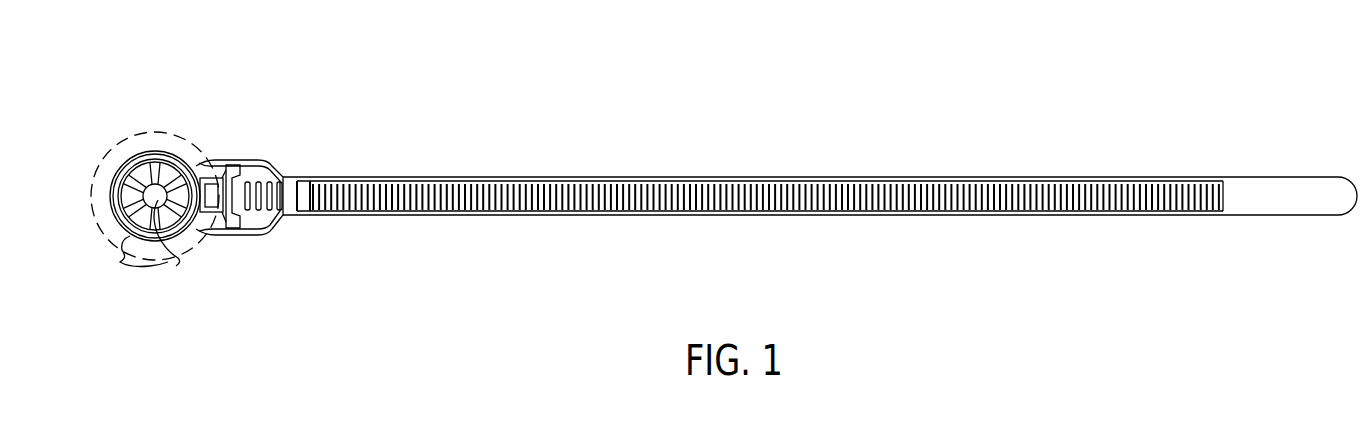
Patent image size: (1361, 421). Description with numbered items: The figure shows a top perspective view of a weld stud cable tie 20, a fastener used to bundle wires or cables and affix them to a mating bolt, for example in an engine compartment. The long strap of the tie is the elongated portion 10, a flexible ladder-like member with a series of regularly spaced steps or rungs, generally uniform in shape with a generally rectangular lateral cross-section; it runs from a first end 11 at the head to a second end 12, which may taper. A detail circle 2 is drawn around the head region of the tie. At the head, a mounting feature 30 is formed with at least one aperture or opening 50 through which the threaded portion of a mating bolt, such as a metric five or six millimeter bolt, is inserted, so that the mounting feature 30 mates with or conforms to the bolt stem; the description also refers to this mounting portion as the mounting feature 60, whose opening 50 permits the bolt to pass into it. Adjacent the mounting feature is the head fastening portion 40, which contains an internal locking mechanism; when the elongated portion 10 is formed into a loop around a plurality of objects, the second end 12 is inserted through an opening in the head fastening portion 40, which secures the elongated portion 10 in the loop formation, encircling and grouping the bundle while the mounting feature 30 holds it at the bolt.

The section line / detail circle 2 is at (156, 130).
The elongated portion 10 is at (818, 177).
The first end 11 is at (322, 177).
The second end 12 is at (1218, 216).
The weld stud cable tie 20 is at (190, 232).
The mounting feature 30 is at (131, 146).
The head fastening portion 40 is at (236, 172).
The aperture or opening 50 is at (172, 254).
The mounting feature 60 is at (120, 252).